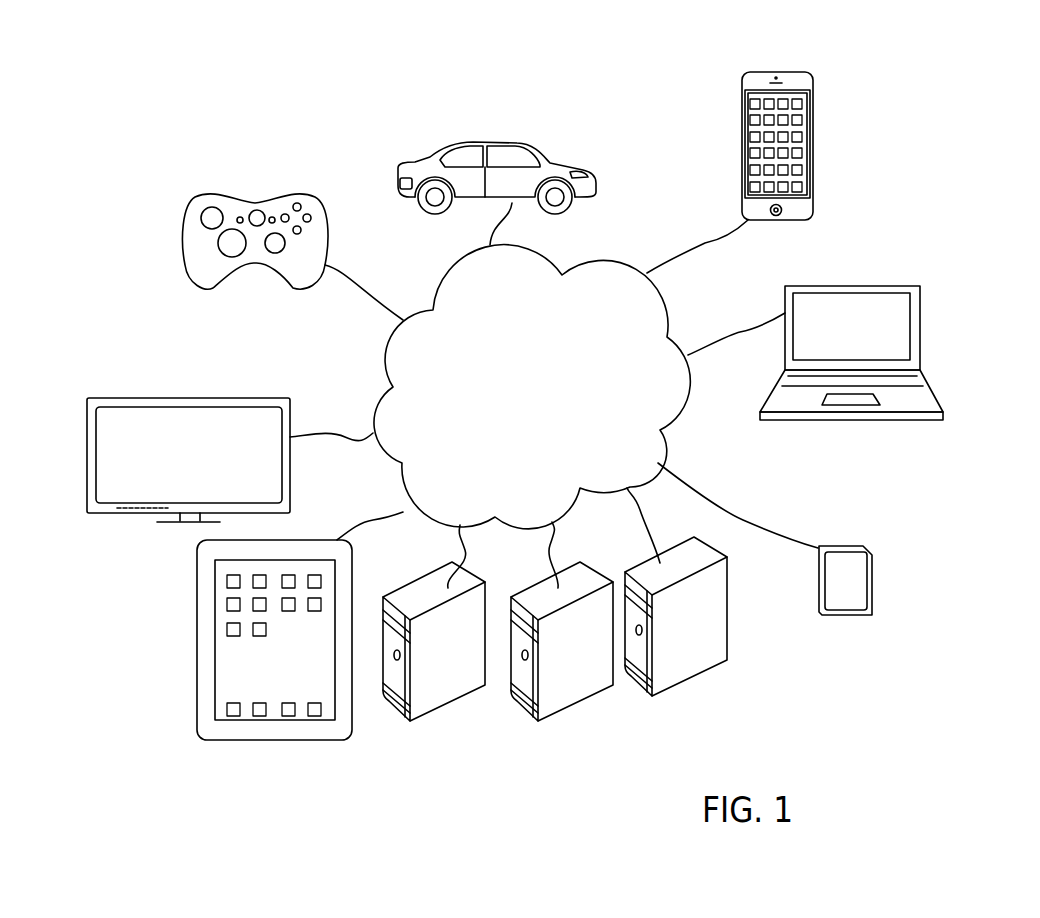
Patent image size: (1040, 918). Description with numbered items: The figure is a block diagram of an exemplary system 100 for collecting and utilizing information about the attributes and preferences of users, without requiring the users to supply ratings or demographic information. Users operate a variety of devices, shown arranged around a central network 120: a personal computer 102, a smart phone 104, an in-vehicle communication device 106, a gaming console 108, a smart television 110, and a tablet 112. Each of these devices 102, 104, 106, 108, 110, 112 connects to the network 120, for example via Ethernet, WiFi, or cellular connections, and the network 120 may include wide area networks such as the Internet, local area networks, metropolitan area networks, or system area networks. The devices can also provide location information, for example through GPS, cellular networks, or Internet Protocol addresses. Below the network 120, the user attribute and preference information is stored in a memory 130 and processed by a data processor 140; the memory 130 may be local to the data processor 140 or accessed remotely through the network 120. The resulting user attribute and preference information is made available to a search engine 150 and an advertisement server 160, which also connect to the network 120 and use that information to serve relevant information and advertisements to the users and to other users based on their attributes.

The system 100 is at (232, 66).
The personal computer 102 is at (937, 393).
The smart phone 104 is at (812, 193).
The in-vehicle communication device 106 is at (593, 178).
The gaming console 108 is at (183, 260).
The smart television 110 is at (130, 515).
The tablet 112 is at (212, 740).
The network 120 is at (662, 423).
The memory 130 is at (872, 580).
The data processor 140 is at (723, 658).
The search engine 150 is at (537, 723).
The advertisement server 160 is at (397, 717).